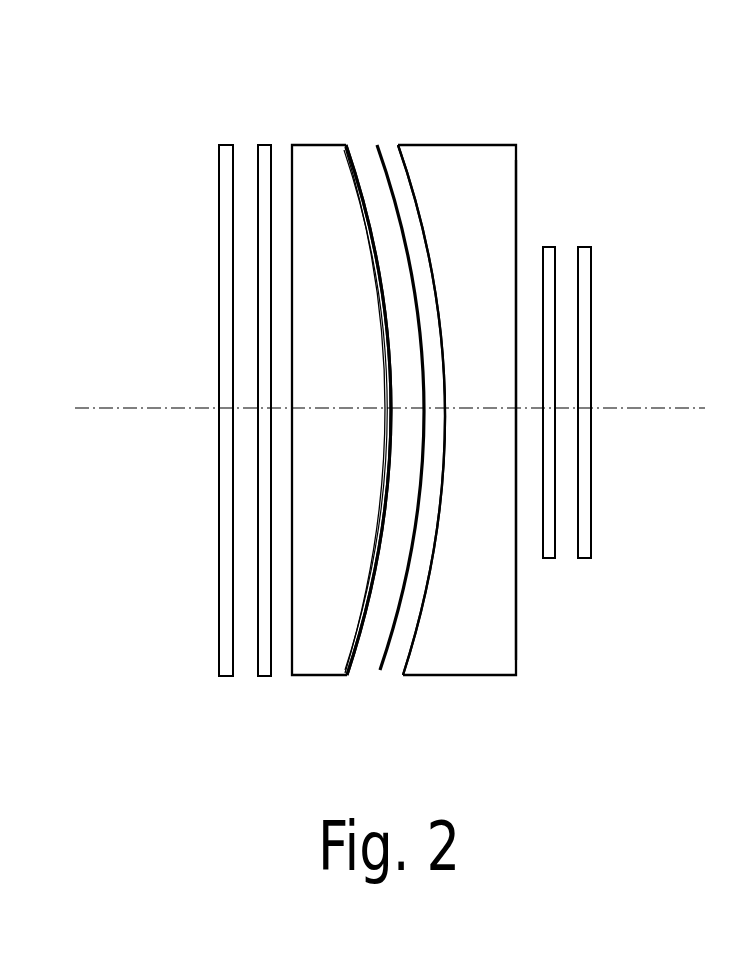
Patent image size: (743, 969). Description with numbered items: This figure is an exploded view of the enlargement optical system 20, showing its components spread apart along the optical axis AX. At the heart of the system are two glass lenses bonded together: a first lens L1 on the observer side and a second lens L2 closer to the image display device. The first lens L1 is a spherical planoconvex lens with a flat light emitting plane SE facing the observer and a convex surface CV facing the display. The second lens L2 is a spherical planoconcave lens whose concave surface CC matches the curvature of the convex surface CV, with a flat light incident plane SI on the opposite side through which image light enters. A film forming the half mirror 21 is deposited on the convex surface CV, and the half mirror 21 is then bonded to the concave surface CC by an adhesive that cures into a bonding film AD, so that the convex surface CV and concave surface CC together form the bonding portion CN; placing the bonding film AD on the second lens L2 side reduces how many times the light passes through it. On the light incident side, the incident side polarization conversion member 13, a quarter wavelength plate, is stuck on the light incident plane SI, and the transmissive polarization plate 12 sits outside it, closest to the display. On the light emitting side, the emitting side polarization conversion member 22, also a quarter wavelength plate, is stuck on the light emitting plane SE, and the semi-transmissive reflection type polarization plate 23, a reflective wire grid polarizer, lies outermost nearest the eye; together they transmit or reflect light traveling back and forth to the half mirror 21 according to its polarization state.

The enlargement optical system 20 is at (410, 383).
The half mirror 21 is at (358, 655).
The emitting side polarization conversion member 22 is at (262, 145).
The semi-transmissive reflection type polarization plate 23 is at (224, 145).
The polarization plate 12 is at (583, 250).
The incident side polarization conversion member 13 is at (548, 247).
The first lens L1 is at (320, 651).
The second lens L2 is at (473, 616).
The bonding film AD is at (383, 667).
The concave surface CC is at (436, 548).
The convex surface CV is at (390, 362).
The light emitting plane SE is at (292, 476).
The light incident plane SI is at (517, 458).
The bonding portion CN is at (363, 118).
The optical axis AX is at (140, 410).